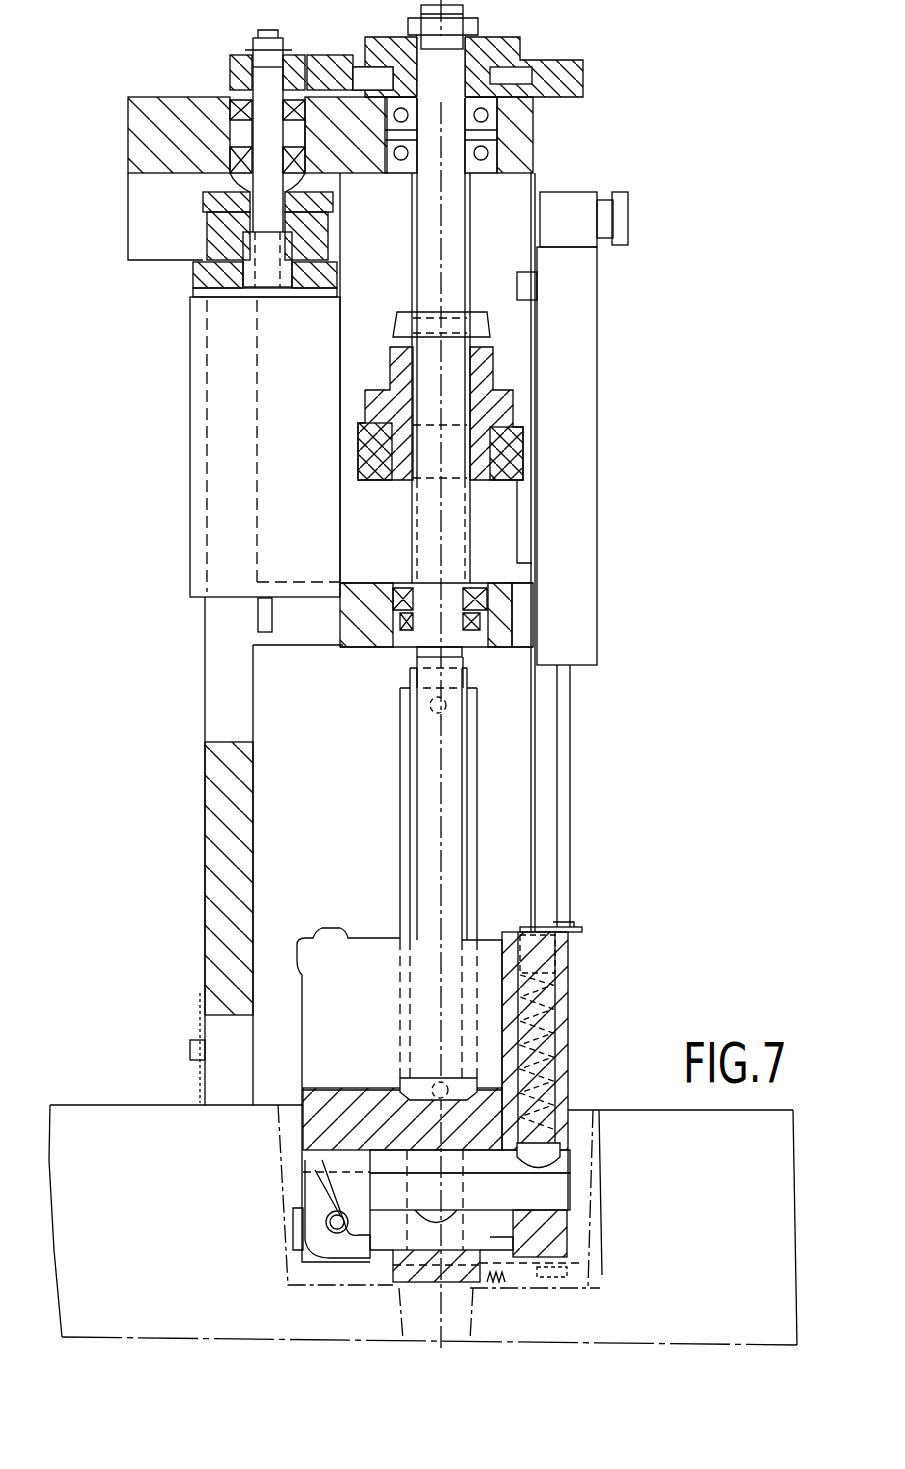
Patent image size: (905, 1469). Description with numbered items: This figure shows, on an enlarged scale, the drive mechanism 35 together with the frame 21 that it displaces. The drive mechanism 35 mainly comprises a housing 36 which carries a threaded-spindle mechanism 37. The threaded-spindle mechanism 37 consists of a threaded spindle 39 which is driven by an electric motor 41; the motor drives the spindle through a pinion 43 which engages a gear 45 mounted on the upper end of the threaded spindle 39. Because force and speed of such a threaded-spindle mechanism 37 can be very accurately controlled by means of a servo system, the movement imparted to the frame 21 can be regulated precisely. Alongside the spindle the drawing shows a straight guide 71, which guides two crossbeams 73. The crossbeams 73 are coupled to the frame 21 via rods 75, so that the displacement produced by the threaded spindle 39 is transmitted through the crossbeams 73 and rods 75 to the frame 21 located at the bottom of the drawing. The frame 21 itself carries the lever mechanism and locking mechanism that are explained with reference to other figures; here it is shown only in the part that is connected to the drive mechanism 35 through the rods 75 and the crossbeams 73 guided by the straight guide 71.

The drive mechanism 35 is at (688, 75).
The pinion 43 is at (295, 55).
The gear 45 is at (563, 58).
The threaded spindle 39 is at (473, 290).
The threaded-spindle mechanism 37 is at (496, 362).
The crossbeams 73 is at (499, 513).
The straight guide 71 is at (523, 540).
The electric motor 41 is at (190, 530).
The housing 36 is at (207, 832).
The rods 75 is at (420, 836).
The frame 21 is at (570, 1087).